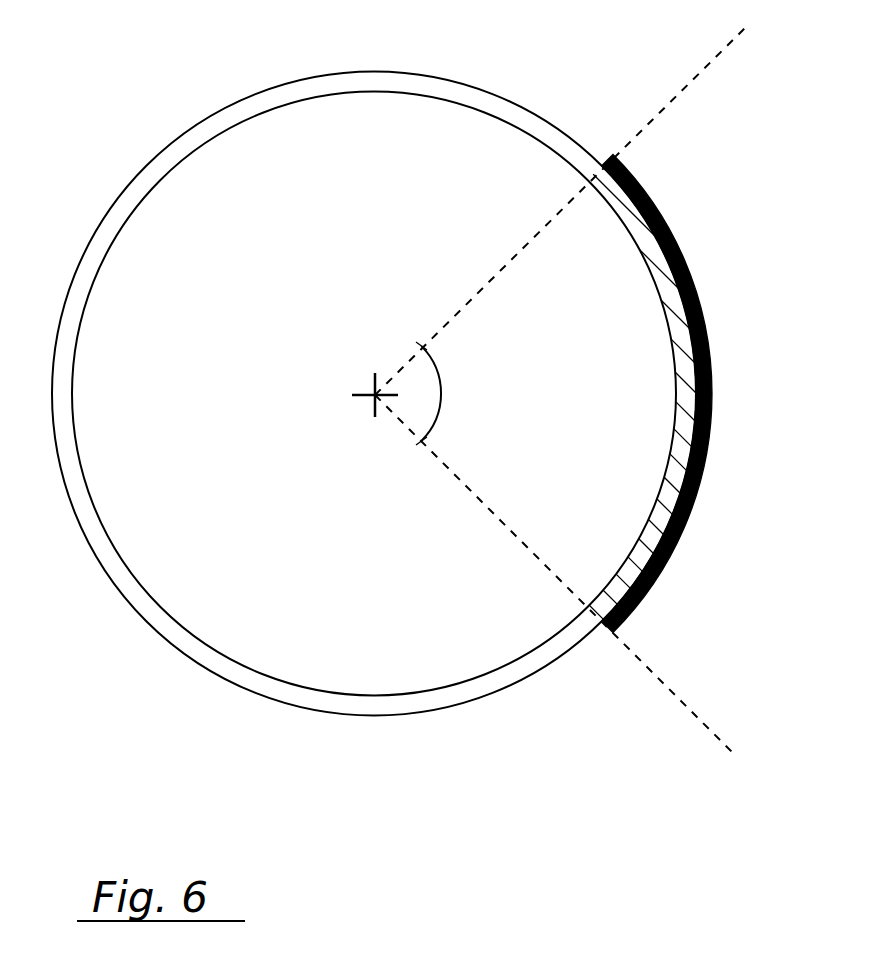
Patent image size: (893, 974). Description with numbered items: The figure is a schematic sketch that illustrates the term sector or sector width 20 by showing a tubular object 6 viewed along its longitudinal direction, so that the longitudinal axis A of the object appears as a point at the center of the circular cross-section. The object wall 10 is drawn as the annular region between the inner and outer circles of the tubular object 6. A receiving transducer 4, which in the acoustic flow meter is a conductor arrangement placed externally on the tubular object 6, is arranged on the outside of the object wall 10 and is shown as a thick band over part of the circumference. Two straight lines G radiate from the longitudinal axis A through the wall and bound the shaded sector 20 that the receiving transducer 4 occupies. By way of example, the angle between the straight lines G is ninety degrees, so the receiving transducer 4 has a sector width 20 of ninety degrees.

The tubular object 6 is at (117, 181).
The object wall 10 is at (238, 108).
The sector 20 is at (656, 248).
The receiving transducer 4 is at (645, 624).
The longitudinal axis A is at (367, 382).
The straight lines G is at (694, 84).